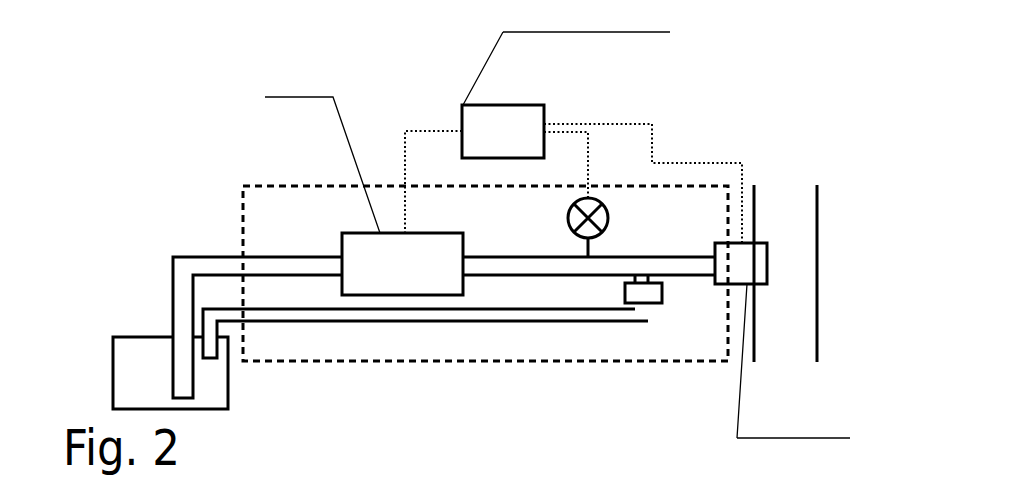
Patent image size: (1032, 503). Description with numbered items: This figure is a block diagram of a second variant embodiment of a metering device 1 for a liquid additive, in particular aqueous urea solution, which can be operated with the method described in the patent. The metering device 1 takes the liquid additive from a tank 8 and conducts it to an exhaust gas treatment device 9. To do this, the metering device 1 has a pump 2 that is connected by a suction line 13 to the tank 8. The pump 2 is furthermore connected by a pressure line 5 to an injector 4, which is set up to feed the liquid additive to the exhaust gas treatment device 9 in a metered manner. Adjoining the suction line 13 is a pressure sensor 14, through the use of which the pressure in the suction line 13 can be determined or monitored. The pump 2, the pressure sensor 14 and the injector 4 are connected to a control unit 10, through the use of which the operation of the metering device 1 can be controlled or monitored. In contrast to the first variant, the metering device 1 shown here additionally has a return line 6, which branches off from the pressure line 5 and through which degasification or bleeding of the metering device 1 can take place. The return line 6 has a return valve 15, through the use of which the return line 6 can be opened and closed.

The metering device 1 is at (214, 180).
The pump 2 is at (428, 295).
The injector 4 is at (722, 243).
The pressure line 5 is at (492, 257).
The return line 6 is at (360, 321).
The tank 8 is at (228, 400).
The exhaust gas treatment device 9 is at (784, 170).
The control unit 10 is at (462, 122).
The suction line 13 is at (296, 257).
The pressure sensor 14 is at (598, 197).
The return valve 15 is at (652, 303).